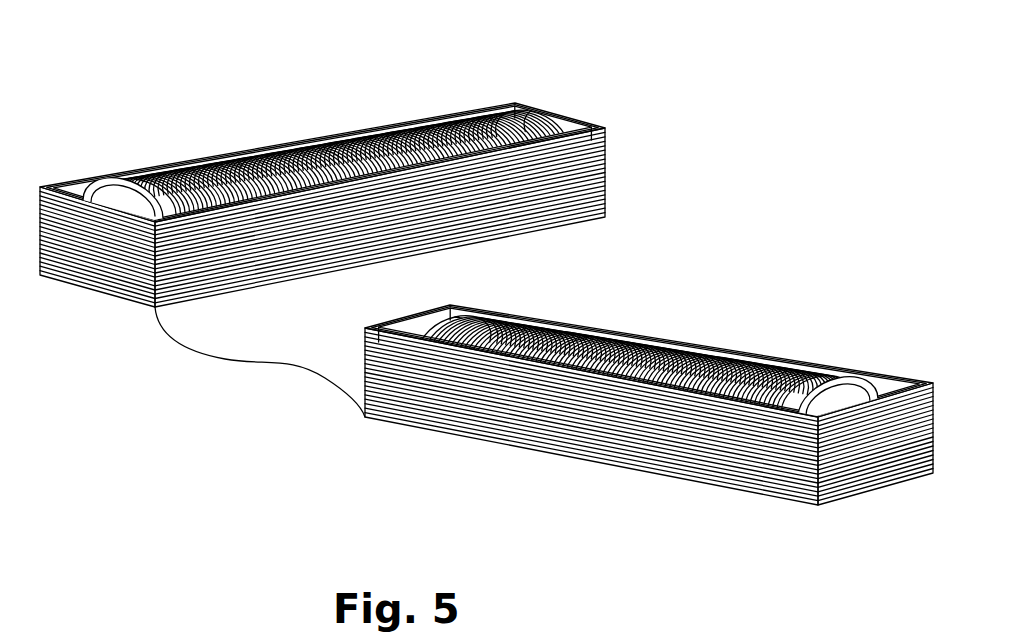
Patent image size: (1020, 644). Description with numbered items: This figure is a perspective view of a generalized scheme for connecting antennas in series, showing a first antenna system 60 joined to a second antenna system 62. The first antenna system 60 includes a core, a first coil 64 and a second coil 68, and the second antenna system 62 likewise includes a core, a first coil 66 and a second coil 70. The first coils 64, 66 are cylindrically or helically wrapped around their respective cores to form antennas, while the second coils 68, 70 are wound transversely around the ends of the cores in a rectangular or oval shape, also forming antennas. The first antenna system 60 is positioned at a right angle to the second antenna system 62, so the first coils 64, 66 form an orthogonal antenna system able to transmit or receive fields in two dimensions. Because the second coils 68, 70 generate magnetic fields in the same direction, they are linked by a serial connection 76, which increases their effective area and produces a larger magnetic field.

The first antenna system 60 is at (322, 179).
The second antenna system 62 is at (649, 431).
The first coil 64 is at (465, 130).
The first coil 66 is at (690, 345).
The second coil 68 is at (100, 292).
The second coil 70 is at (475, 440).
The serial connection 76 is at (245, 363).